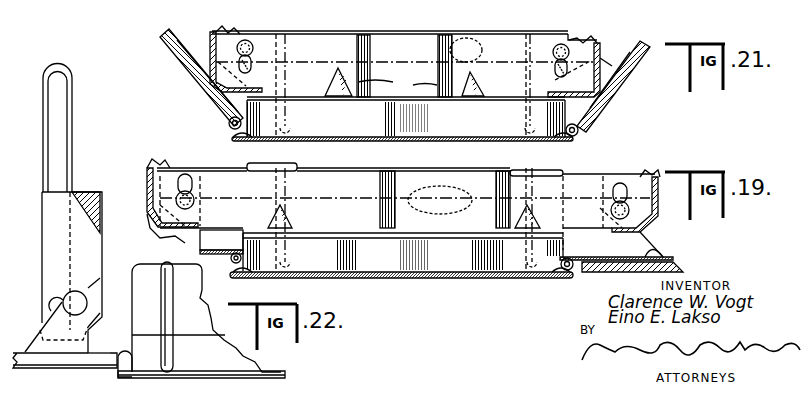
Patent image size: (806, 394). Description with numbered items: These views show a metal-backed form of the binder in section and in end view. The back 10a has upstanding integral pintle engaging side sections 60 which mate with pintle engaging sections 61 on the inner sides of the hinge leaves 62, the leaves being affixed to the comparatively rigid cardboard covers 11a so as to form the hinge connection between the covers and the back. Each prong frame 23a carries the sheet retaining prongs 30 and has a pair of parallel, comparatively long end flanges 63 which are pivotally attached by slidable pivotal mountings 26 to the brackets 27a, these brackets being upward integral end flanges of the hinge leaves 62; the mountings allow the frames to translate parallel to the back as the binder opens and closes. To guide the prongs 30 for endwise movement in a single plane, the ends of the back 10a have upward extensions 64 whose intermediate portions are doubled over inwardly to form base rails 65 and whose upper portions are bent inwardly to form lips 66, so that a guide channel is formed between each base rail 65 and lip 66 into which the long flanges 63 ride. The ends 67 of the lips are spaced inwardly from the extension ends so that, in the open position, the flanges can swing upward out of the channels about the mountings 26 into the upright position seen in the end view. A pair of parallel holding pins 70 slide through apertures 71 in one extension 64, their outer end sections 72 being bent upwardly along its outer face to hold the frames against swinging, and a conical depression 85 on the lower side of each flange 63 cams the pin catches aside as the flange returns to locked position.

In FIG. 21, the back 10a is at (380, 141).
In FIG. 19, the back 10a is at (375, 279).
In FIG. 22, the back 10a is at (206, 371).
In FIG. 21, the covers 11a is at (198, 66).
In FIG. 19, the covers 11a is at (684, 267).
In FIG. 21, the prong frames 23a is at (200, 81).
In FIG. 19, the prong frames 23a is at (149, 166).
In FIG. 22, the prong frames 23a is at (93, 326).
In FIG. 21, the slidable pivotal mountings 26 is at (245, 40).
In FIG. 19, the slidable pivotal mountings 26 is at (611, 213).
In FIG. 22, the slidable pivotal mountings 26 is at (77, 291).
In FIG. 21, the brackets 27a is at (604, 56).
In FIG. 19, the brackets 27a is at (655, 236).
In FIG. 22, the brackets 27a is at (100, 305).
In FIG. 22, the prongs 30 is at (73, 125).
In FIG. 21, the pintle engaging side sections 60 is at (252, 139).
In FIG. 19, the pintle engaging side sections 60 is at (254, 278).
In FIG. 21, the pintle engaging sections 61 is at (230, 125).
In FIG. 19, the pintle engaging sections 61 is at (236, 252).
In FIG. 21, the hinge leaves 62 is at (212, 50).
In FIG. 19, the hinge leaves 62 is at (664, 252).
In FIG. 21, the end flanges 63 is at (300, 88).
In FIG. 19, the end flanges 63 is at (210, 171).
In FIG. 22, the end flanges 63 is at (52, 221).
In FIG. 22, the upward extensions 64 is at (260, 366).
In FIG. 22, the base rails 65 is at (187, 334).
In FIG. 21, the lips 66 is at (419, 66).
In FIG. 19, the lips 66 is at (382, 172).
In FIG. 21, the ends of the lips 67 is at (280, 31).
In FIG. 19, the ends of the lips 67 is at (278, 170).
In FIG. 21, the holding pins 70 is at (287, 75).
In FIG. 19, the holding pins 70 is at (296, 188).
In FIG. 22, the holding pins 70 is at (161, 277).
In FIG. 21, the apertures 71 is at (291, 127).
In FIG. 19, the apertures 71 is at (291, 262).
In FIG. 21, the outer end sections 72 is at (287, 38).
In FIG. 19, the outer end sections 72 is at (283, 184).
In FIG. 22, the outer end sections 72 is at (166, 305).
In FIG. 21, the conical depression 85 is at (397, 83).
In FIG. 19, the conical depression 85 is at (515, 223).
In FIG. 22, the conical depression 85 is at (90, 196).